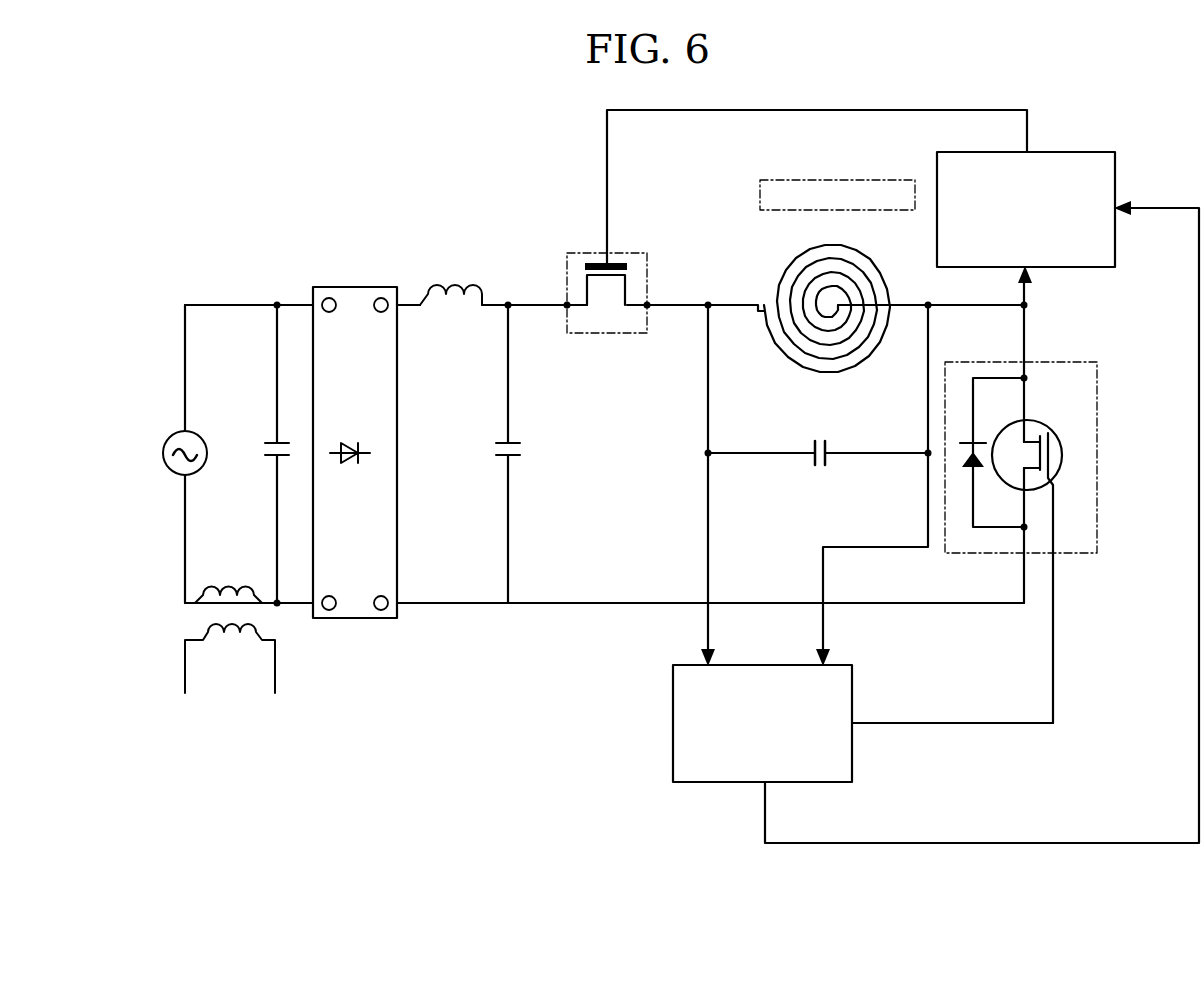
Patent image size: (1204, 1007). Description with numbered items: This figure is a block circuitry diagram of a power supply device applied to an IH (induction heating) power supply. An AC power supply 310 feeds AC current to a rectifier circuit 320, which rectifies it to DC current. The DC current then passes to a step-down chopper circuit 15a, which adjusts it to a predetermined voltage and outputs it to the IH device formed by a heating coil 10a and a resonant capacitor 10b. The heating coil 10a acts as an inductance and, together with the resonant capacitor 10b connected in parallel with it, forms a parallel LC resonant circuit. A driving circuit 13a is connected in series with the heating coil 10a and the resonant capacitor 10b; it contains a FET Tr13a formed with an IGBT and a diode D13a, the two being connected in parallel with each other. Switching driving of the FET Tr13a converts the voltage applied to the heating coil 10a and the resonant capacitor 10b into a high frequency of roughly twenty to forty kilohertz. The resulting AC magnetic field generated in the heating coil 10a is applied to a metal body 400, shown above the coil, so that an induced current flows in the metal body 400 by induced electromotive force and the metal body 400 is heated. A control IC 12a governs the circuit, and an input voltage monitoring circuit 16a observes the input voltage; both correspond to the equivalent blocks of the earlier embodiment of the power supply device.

The AC power supply 310 is at (166, 438).
The rectifier circuit 320 is at (355, 620).
The step-down chopper circuit 15a is at (571, 251).
The metal body 400 is at (826, 180).
The heating coil 10a is at (838, 378).
The resonant capacitor 10b is at (830, 462).
The input voltage monitoring circuit 16a is at (1069, 151).
The driving circuit 13a is at (1030, 517).
The FET Tr13a is at (1040, 559).
The diode D13a is at (992, 465).
The control IC 12a is at (856, 692).